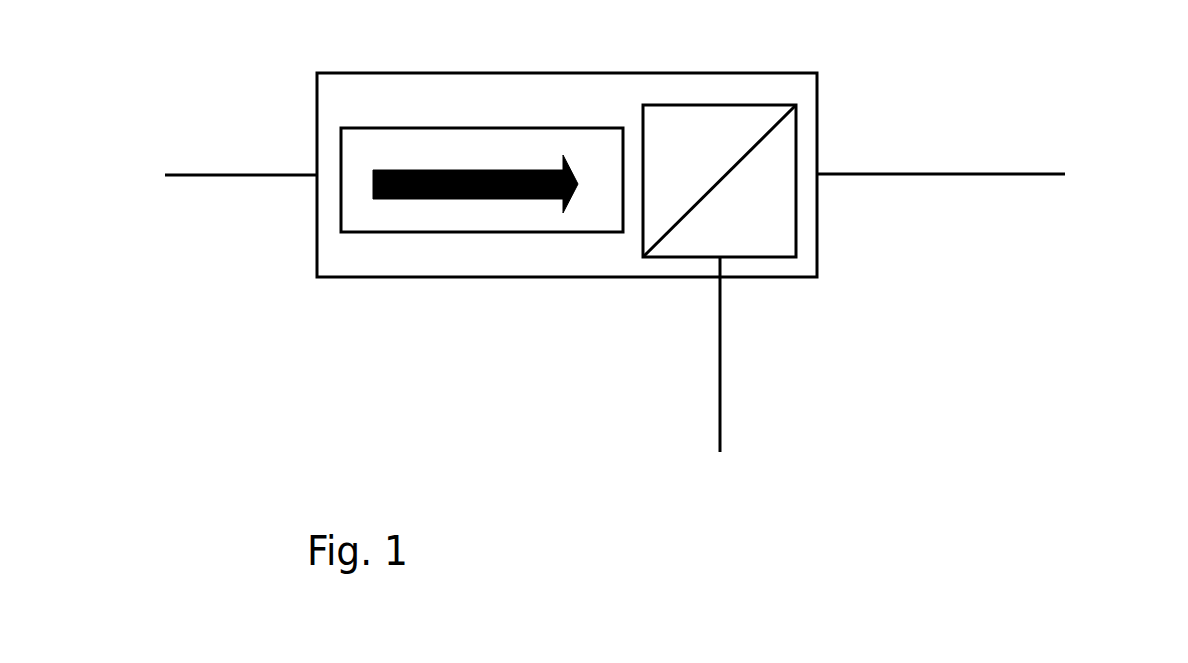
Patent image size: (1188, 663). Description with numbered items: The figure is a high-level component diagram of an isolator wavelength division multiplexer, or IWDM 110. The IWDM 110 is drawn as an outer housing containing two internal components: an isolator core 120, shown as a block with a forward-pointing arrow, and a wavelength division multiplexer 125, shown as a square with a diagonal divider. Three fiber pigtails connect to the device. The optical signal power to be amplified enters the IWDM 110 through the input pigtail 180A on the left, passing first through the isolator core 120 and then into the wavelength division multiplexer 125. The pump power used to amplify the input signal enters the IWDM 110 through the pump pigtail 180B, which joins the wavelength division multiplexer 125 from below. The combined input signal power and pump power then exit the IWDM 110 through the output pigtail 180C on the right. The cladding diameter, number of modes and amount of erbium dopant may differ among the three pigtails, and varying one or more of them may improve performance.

The isolator wavelength division multiplexer 110 is at (508, 72).
The isolator core 120 is at (499, 128).
The wavelength division multiplexer 125 is at (720, 105).
The input pigtail 180A is at (230, 175).
The pump pigtail 180B is at (719, 419).
The output pigtail 180C is at (872, 172).